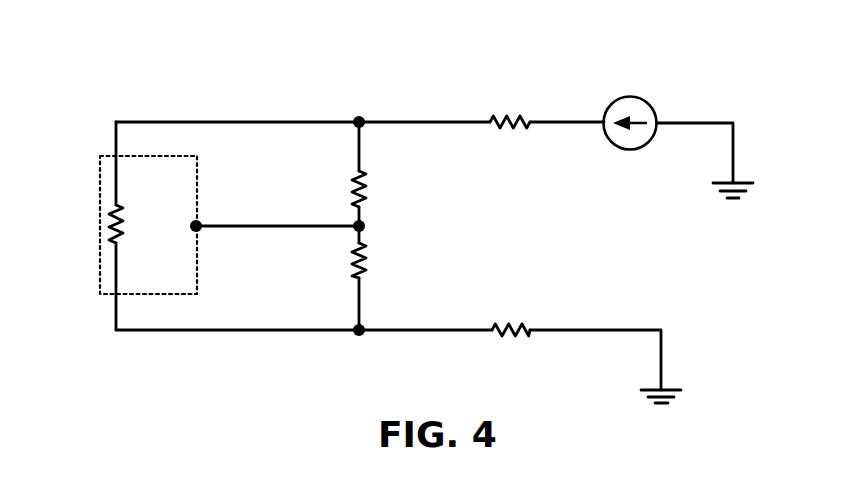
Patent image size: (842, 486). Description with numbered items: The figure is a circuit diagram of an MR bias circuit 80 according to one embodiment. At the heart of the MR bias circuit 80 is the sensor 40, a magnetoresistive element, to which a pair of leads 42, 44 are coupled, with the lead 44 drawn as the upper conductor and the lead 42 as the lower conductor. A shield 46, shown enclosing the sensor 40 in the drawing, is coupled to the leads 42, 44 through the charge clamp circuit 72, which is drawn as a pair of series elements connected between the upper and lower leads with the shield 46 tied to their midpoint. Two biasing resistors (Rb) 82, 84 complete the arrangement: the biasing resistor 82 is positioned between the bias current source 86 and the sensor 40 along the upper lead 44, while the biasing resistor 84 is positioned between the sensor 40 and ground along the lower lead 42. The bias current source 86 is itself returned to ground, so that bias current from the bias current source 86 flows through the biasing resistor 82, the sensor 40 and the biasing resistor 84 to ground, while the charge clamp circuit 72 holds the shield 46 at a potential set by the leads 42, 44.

The MR bias circuit 80 is at (100, 74).
The sensor 40 is at (111, 230).
The lead 44 is at (228, 121).
The lead 42 is at (234, 331).
The shield 46 is at (167, 296).
The charge clamp circuit 72 is at (384, 220).
The biasing resistor 82 is at (497, 114).
The biasing resistor 84 is at (507, 323).
The bias current source 86 is at (652, 103).